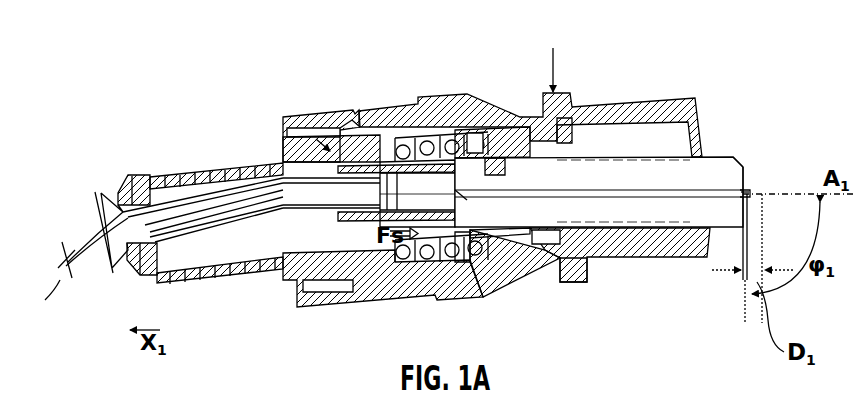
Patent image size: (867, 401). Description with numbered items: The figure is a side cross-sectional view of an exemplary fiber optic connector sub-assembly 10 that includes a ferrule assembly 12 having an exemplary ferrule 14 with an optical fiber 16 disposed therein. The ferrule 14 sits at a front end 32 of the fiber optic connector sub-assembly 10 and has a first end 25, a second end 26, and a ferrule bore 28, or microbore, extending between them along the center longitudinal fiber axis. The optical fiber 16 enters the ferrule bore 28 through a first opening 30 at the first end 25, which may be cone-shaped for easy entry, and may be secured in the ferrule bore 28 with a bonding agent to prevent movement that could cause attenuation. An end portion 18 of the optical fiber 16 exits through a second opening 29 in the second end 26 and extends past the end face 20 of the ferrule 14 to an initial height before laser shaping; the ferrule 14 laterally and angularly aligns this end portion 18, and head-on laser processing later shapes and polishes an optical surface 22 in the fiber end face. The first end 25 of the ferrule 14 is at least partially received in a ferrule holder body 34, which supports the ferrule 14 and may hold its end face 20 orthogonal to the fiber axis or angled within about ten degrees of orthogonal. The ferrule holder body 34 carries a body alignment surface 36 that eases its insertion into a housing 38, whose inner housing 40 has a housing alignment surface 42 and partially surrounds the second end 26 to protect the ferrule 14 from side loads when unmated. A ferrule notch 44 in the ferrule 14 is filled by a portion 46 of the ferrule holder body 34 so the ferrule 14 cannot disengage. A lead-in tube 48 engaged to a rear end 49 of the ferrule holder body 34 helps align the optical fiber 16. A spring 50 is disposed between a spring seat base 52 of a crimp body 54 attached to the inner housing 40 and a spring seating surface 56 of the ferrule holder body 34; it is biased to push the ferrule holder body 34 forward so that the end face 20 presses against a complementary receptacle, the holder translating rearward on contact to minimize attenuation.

The fiber optic connector sub-assembly 10 is at (266, 94).
The ferrule assembly 12 is at (655, 278).
The ferrule 14 is at (708, 168).
The optical fiber 16 is at (603, 188).
The end portion 18 is at (758, 190).
The end face 20 is at (748, 175).
The optical surface 22 is at (762, 200).
The first end 25 is at (438, 130).
The second end 26 is at (745, 158).
The ferrule bore 28 is at (573, 283).
The second opening 29 is at (740, 200).
The first opening 30 is at (430, 133).
The front end 32 is at (700, 62).
The ferrule holder body 34 is at (498, 245).
The body alignment surface 36 is at (492, 240).
The housing 38 is at (553, 57).
The inner housing 40 is at (560, 98).
The housing alignment surface 42 is at (501, 180).
The ferrule notch 44 is at (537, 157).
The portion 46 is at (493, 133).
The lead-in tube 48 is at (227, 220).
The rear end 49 is at (296, 134).
The spring 50 is at (436, 268).
The spring seat base 52 is at (418, 268).
The crimp body 54 is at (277, 268).
The spring seating surface 56 is at (463, 265).